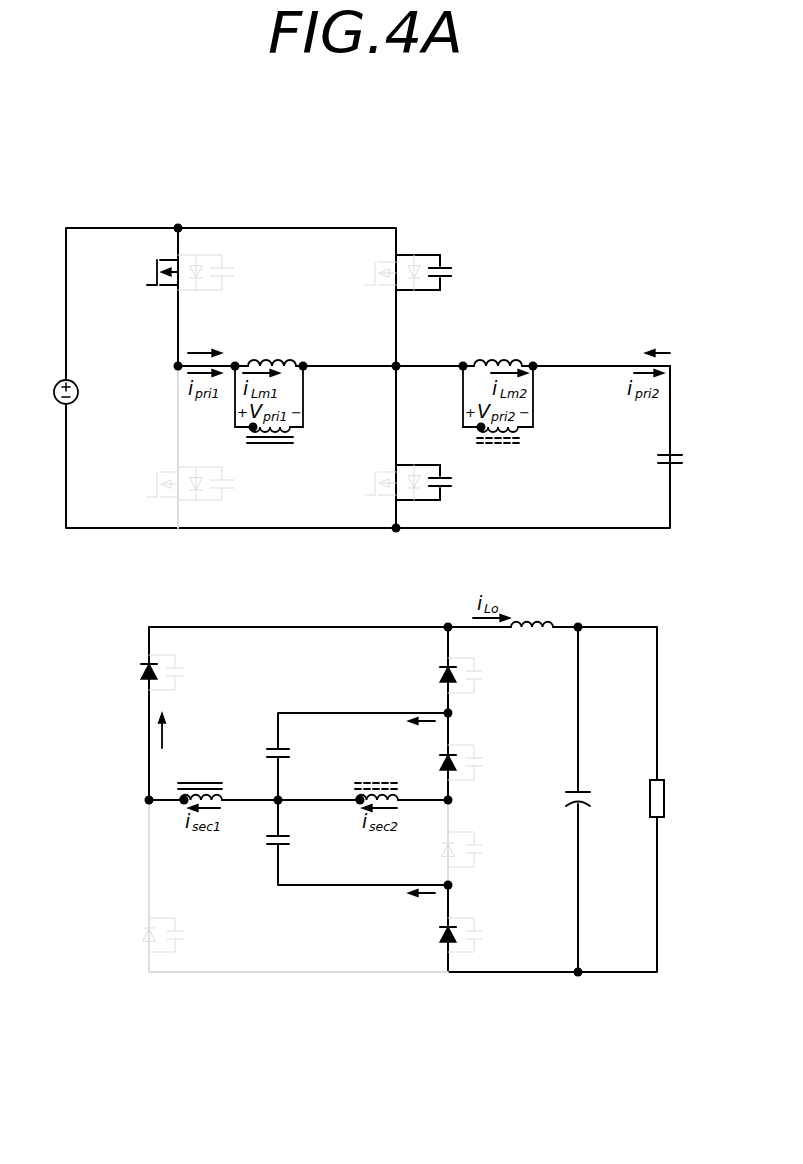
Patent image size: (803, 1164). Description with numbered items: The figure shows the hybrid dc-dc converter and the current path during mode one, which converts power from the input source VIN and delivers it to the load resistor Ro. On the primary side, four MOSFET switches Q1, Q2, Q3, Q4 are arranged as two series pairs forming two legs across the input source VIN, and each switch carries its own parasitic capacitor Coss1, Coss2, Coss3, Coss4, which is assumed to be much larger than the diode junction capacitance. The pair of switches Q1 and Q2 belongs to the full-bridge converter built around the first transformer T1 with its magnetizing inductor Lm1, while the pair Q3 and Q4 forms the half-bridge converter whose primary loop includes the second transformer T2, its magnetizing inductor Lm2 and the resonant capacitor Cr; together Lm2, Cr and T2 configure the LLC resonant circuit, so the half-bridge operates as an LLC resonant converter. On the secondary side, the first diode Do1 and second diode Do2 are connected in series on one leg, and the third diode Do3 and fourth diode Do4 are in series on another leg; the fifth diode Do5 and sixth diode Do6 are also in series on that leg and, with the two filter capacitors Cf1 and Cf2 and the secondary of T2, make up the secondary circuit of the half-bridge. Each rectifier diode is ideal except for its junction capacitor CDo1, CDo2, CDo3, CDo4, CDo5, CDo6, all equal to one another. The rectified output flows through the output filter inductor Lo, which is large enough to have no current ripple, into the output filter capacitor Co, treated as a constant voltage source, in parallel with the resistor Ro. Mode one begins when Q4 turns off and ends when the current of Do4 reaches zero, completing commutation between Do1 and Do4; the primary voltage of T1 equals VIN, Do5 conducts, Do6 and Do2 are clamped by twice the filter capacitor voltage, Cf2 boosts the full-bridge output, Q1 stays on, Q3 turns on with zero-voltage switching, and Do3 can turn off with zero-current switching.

The power source VIN is at (80, 396).
The switch Q1 is at (150, 275).
The switch Q2 is at (150, 487).
The switch Q3 is at (370, 487).
The switch Q4 is at (370, 276).
The switch parasitic capacitor Coss1 is at (230, 272).
The switch parasitic capacitor Coss2 is at (230, 484).
The switch parasitic capacitor Coss3 is at (447, 483).
The switch parasitic capacitor Coss4 is at (447, 272).
The magnetizing inductor Lm1 is at (269, 352).
The magnetizing inductor Lm2 is at (498, 352).
The first transformer T1 is at (282, 406).
The second transformer T2 is at (510, 406).
The resonant capacitor Cr is at (674, 459).
The first diode Do1 is at (130, 674).
The second diode Do2 is at (129, 936).
The third diode Do3 is at (433, 936).
The fourth diode Do4 is at (433, 678).
The fifth diode Do5 is at (433, 764).
The sixth diode Do6 is at (432, 851).
The junction capacitor CDo1 is at (189, 672).
The junction capacitor CDo2 is at (189, 935).
The junction capacitor CDo3 is at (489, 935).
The junction capacitor CDo4 is at (489, 675).
The junction capacitor CDo5 is at (489, 762).
The junction capacitor CDo6 is at (489, 849).
The filter capacitor Cf1 is at (285, 751).
The filter capacitor Cf2 is at (299, 837).
The output filter inductor Lo is at (538, 624).
The output filter capacitor Co is at (565, 792).
The resistor Ro is at (655, 803).